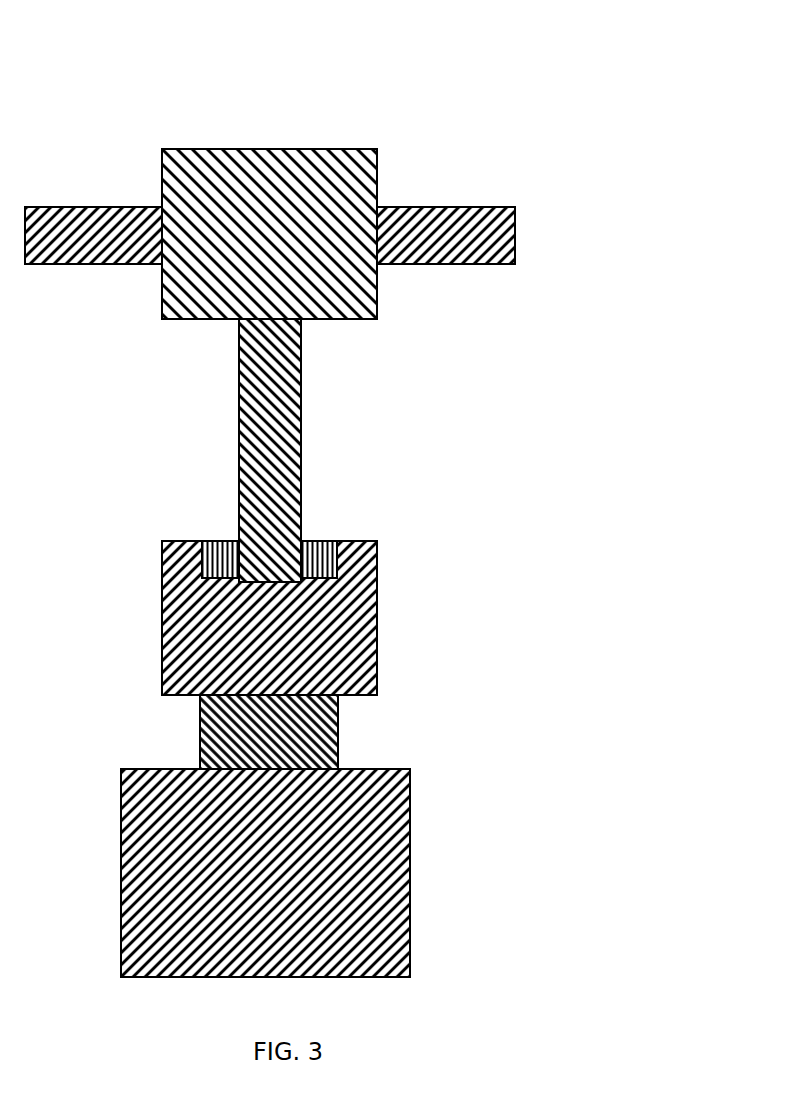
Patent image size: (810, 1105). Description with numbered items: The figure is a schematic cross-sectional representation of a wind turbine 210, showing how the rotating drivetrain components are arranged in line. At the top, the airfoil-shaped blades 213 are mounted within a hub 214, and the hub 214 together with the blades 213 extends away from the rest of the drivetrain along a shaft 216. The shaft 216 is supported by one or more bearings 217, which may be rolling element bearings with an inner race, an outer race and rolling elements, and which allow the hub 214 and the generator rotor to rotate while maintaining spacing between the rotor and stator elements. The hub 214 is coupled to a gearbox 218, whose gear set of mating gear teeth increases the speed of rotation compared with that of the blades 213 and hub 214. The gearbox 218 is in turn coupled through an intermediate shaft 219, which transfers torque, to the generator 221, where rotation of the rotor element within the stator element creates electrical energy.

The wind turbine 210 is at (612, 242).
The blades 213 is at (450, 207).
The hub 214 is at (275, 150).
The shaft 216 is at (302, 467).
The bearings 217 is at (327, 540).
The gearbox 218 is at (377, 635).
The intermediate shaft 219 is at (338, 730).
The generator 221 is at (410, 898).